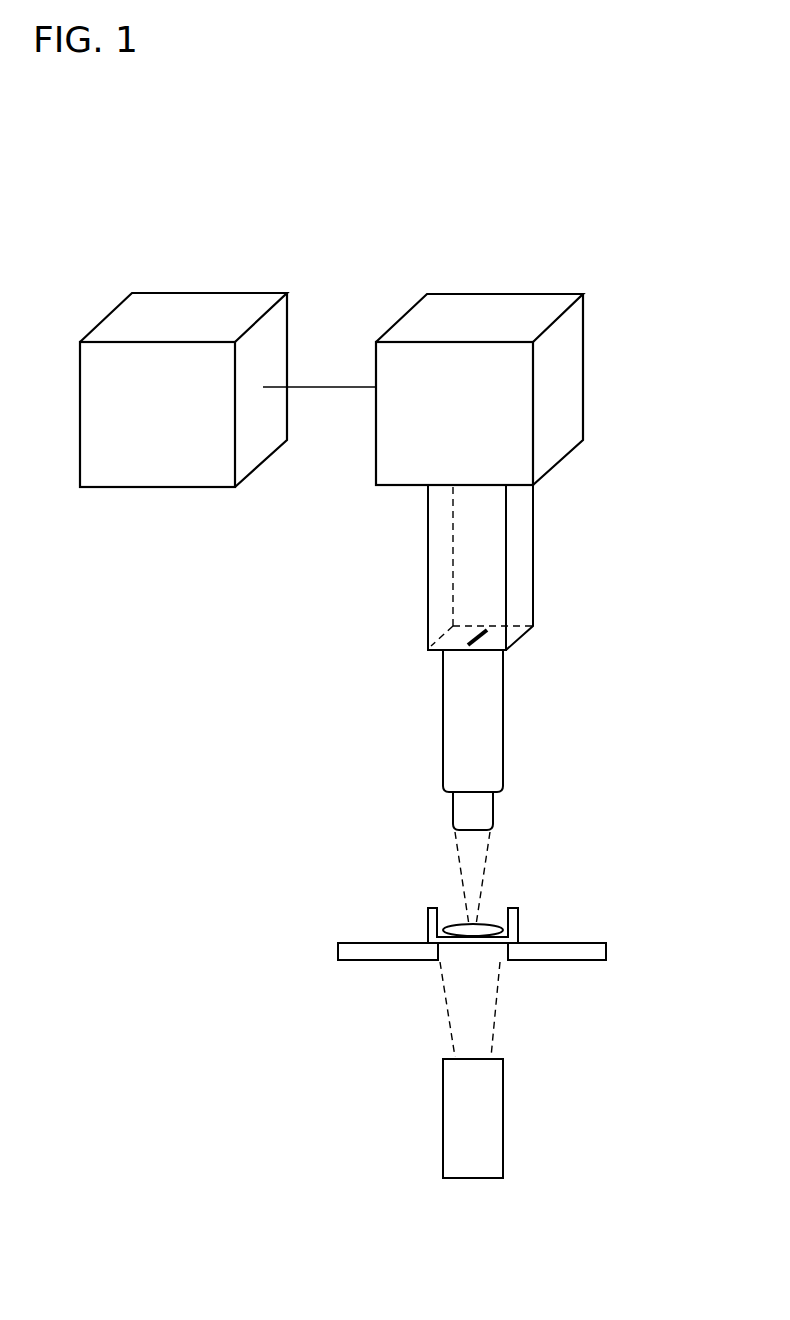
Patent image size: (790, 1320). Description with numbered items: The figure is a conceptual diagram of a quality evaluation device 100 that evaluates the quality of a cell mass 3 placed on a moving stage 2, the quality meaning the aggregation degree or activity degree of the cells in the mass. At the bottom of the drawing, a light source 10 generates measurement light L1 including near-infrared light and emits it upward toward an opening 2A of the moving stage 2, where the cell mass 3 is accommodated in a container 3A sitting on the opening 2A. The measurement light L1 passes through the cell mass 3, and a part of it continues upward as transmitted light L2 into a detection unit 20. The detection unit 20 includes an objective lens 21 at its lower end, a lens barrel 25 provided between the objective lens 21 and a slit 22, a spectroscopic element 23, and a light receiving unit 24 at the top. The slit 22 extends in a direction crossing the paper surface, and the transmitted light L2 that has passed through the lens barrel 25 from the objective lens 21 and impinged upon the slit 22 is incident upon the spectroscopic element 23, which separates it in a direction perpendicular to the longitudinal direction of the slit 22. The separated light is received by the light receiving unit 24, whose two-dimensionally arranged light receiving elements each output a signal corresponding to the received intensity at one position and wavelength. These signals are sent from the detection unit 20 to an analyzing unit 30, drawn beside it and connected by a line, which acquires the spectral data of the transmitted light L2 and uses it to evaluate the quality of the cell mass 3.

The quality evaluation device 100 is at (636, 206).
The analyzing unit 30 is at (233, 293).
The detection unit 20 is at (513, 523).
The light receiving unit 24 is at (583, 348).
The spectroscopic element 23 is at (533, 549).
The slit 22 is at (480, 627).
The lens barrel 25 is at (503, 706).
The objective lens 21 is at (493, 806).
The transmitted light L2 is at (455, 858).
The container 3A is at (428, 913).
The cell mass 3 is at (490, 924).
The moving stage 2 is at (606, 951).
The opening 2A is at (508, 952).
The measurement light L1 is at (447, 1024).
The light source 10 is at (503, 1096).